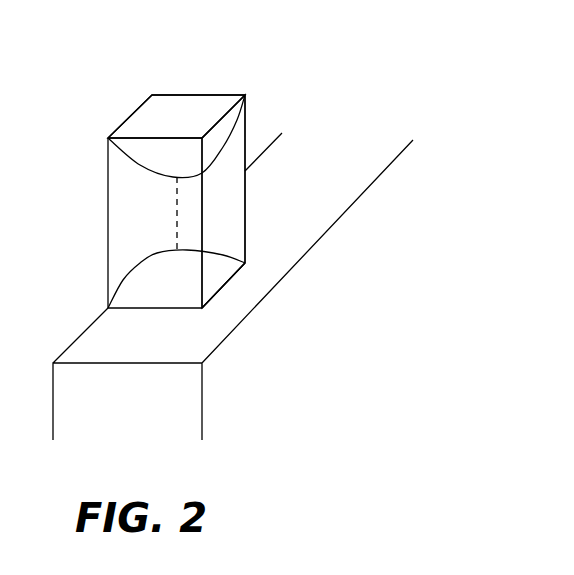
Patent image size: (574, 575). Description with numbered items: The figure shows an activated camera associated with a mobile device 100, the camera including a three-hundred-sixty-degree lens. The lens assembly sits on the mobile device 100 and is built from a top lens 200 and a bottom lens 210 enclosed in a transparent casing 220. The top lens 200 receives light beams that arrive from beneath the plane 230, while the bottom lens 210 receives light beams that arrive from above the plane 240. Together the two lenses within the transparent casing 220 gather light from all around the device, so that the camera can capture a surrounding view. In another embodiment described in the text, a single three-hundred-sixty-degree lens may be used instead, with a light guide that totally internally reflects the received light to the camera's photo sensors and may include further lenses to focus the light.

The mobile device 100 is at (352, 169).
The top lens 200 is at (133, 150).
The bottom lens 210 is at (130, 293).
The transparent casing 220 is at (230, 193).
The plane 230 is at (193, 107).
The plane 240 is at (223, 287).